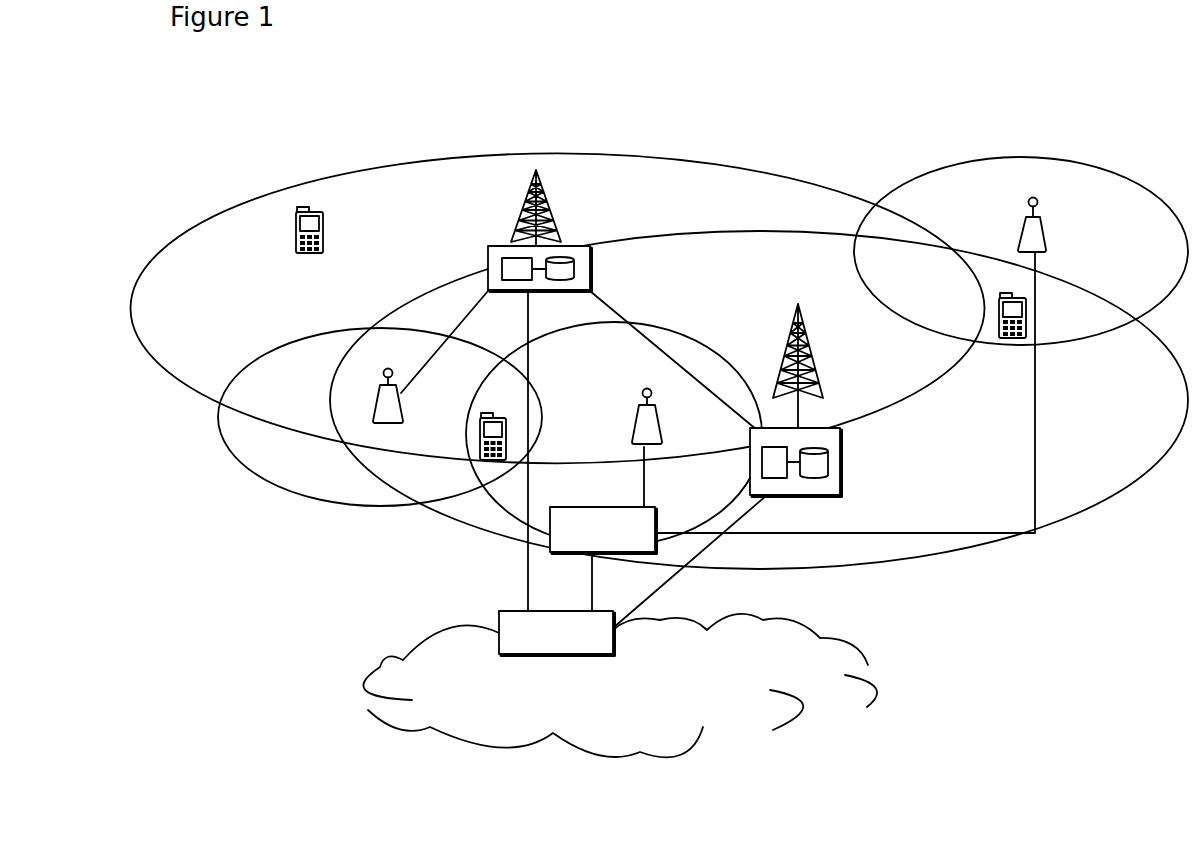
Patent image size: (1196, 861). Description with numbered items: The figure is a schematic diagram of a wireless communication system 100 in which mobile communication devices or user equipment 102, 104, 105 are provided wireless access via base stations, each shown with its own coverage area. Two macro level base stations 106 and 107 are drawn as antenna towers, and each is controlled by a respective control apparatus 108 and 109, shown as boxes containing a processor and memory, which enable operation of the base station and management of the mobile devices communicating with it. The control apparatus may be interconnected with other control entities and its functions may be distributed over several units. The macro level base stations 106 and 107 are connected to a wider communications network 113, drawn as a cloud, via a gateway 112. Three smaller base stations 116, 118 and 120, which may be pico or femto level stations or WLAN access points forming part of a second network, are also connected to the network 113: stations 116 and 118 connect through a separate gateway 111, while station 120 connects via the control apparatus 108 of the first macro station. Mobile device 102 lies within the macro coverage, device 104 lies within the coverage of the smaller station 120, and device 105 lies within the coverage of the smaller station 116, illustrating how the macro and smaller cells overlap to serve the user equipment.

The wireless communication system 100 is at (233, 197).
The mobile communication device 102 is at (293, 245).
The mobile communication device 104 is at (482, 440).
The mobile communication device 105 is at (1012, 340).
The macro level base station 106 is at (519, 216).
The macro level base station 107 is at (818, 366).
The control apparatus 108 is at (488, 260).
The control apparatus 109 is at (833, 485).
The gateway 111 is at (558, 533).
The gateway 112 is at (503, 608).
The wider communications network 113 is at (432, 663).
The smaller base station 116 is at (1022, 228).
The smaller base station 118 is at (650, 433).
The smaller base station 120 is at (378, 398).